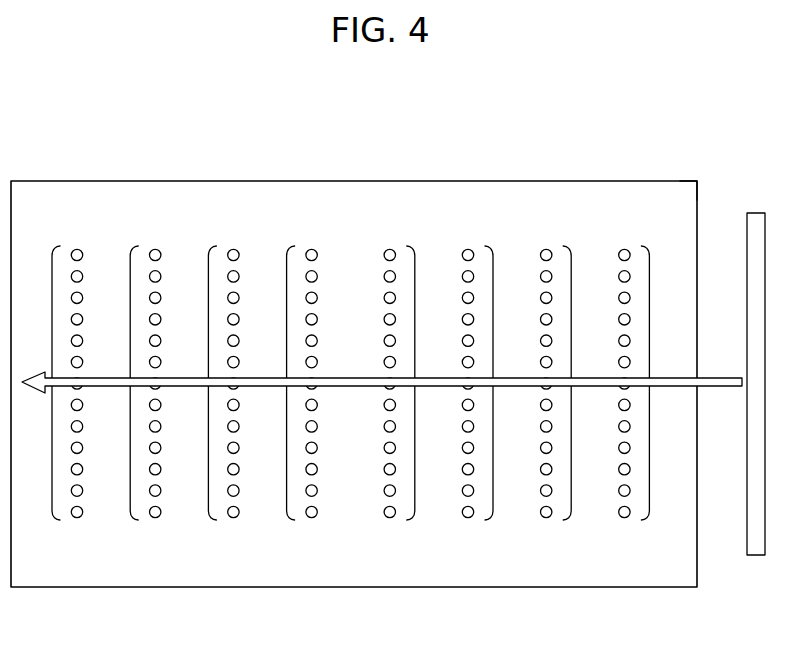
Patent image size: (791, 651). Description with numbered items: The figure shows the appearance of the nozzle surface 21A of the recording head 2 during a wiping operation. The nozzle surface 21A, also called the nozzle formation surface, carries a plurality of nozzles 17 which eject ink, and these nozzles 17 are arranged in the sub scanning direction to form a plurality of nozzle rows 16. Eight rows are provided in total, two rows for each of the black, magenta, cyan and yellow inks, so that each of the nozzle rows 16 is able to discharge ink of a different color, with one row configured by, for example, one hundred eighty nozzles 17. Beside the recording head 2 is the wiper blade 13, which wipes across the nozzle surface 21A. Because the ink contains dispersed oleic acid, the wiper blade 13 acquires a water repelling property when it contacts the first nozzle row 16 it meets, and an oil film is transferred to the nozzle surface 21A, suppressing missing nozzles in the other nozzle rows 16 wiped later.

The recording head 2 is at (652, 162).
The nozzle surface 21A is at (686, 188).
The nozzles 17 is at (350, 327).
The nozzle rows 16 is at (353, 440).
The wiper blade 13 is at (757, 217).